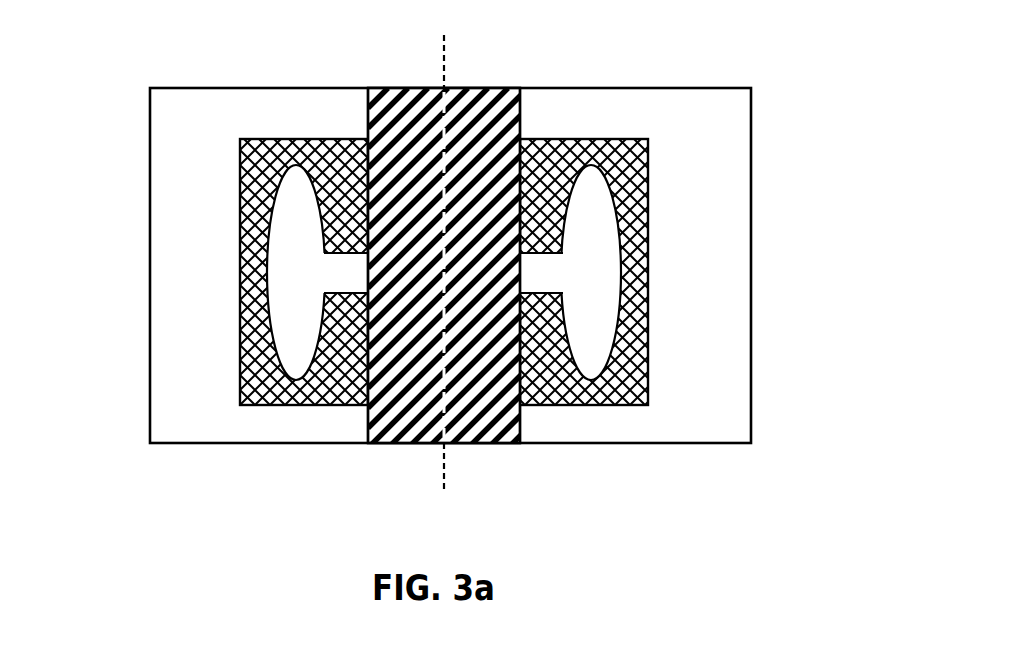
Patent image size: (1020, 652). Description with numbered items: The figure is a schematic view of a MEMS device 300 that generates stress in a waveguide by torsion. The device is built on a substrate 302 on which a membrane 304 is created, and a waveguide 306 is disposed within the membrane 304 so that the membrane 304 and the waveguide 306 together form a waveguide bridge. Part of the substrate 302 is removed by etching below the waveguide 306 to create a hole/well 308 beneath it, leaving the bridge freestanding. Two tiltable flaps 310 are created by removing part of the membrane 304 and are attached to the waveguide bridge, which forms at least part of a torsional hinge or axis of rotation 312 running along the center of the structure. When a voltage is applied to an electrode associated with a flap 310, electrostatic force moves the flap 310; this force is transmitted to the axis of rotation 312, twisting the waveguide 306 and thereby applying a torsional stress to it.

The MEMS device 300 is at (158, 46).
The substrate 302 is at (516, 235).
The membrane 304 is at (673, 125).
The waveguide 306 is at (404, 410).
The hole/well 308 is at (620, 380).
The tiltable flap 310 is at (303, 273).
The axis of rotation 312 is at (444, 493).